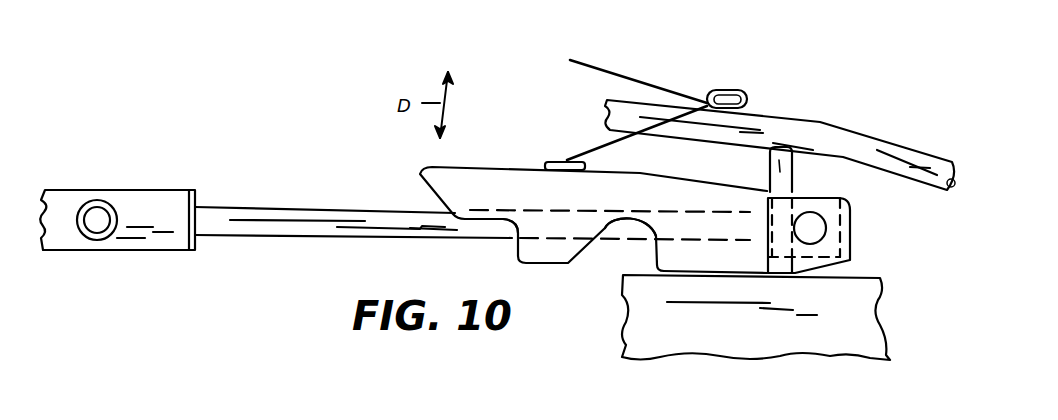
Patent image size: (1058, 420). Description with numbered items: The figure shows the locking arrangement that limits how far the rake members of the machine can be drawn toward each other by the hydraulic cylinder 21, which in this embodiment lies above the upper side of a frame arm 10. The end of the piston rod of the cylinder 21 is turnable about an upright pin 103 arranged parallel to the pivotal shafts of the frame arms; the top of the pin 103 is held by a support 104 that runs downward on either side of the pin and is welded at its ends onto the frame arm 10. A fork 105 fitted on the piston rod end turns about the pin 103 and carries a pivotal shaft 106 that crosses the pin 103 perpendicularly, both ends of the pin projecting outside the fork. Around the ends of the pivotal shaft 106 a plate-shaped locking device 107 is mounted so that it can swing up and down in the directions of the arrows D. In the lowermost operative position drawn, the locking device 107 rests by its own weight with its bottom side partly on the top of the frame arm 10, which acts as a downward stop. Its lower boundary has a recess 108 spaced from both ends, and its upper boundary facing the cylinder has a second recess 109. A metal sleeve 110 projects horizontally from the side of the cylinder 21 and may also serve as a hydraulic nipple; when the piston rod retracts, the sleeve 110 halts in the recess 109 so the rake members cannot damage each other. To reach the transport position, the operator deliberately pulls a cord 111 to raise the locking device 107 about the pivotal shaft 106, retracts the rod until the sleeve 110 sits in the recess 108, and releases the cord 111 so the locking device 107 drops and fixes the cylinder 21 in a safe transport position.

The frame arm 10 is at (657, 327).
The hydraulic cylinder 21 is at (157, 200).
The upright pin 103 is at (768, 162).
The support 104 is at (852, 137).
The fork 105 is at (830, 250).
The pivotal shaft 106 is at (812, 228).
The locking device 107 is at (483, 182).
The recess 108 is at (627, 240).
The second recess 109 is at (508, 225).
The metal sleeve 110 is at (97, 200).
The cord 111 is at (637, 47).